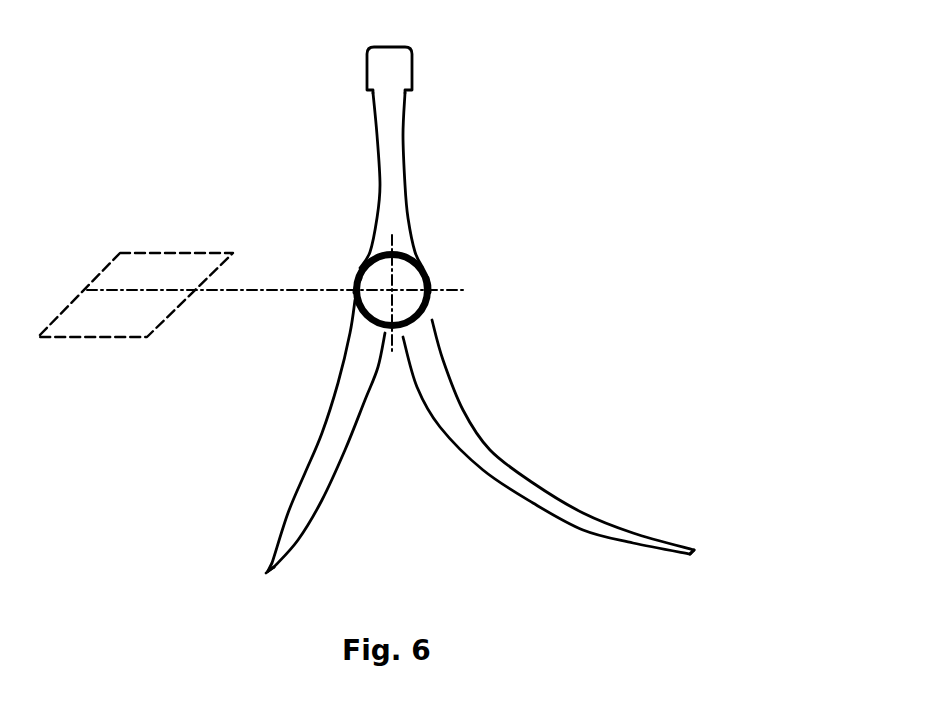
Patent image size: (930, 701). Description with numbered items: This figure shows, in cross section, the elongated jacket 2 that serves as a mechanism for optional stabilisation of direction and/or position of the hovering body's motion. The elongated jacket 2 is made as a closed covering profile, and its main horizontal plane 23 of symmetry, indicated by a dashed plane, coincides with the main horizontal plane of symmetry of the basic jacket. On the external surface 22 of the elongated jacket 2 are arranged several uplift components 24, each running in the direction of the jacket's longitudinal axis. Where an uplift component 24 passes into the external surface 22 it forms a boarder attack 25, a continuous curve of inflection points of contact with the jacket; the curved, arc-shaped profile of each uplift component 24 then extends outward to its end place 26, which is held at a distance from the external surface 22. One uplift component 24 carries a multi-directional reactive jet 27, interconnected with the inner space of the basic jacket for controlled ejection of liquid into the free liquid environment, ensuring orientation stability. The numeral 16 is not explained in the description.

The elongated jacket 2 is at (439, 292).
The arm 16 is at (313, 469).
The external surface of the elongated jacket 22 is at (357, 260).
The main horizontal plane of symmetry of the elongated jacket 23 is at (102, 320).
The uplift component 24 is at (408, 198).
The boarder attack 25 is at (355, 292).
The end place of the uplift component 26 is at (268, 571).
The multi-directional reactive jet 27 is at (367, 74).